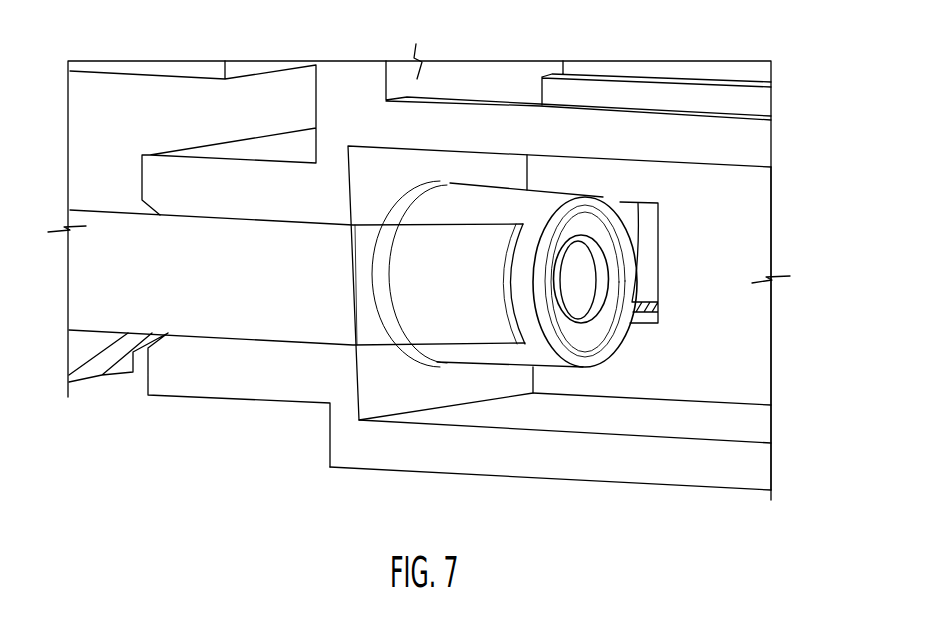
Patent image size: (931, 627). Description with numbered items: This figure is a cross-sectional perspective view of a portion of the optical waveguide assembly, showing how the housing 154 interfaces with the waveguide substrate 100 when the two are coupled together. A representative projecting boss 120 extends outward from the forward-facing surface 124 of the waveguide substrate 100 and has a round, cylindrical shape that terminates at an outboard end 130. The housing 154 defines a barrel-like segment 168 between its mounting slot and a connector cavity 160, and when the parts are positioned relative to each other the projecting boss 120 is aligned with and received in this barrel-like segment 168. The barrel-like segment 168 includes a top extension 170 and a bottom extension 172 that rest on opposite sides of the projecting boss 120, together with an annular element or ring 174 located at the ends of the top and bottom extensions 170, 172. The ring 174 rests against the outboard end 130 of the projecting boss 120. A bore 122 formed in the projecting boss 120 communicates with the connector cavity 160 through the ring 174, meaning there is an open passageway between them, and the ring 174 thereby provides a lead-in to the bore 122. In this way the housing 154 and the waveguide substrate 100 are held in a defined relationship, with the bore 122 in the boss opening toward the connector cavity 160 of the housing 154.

The waveguide substrate 100 is at (115, 112).
The projecting boss 120 is at (440, 328).
The bore 122 is at (572, 292).
The forward-facing surface 124 is at (368, 330).
The outboard end 130 is at (592, 272).
The housing 154 is at (718, 487).
The connector cavity 160 is at (755, 362).
The barrel-like segment 168 is at (558, 191).
The top extension 170 is at (503, 190).
The bottom extension 172 is at (492, 364).
The annular element 174 is at (607, 196).